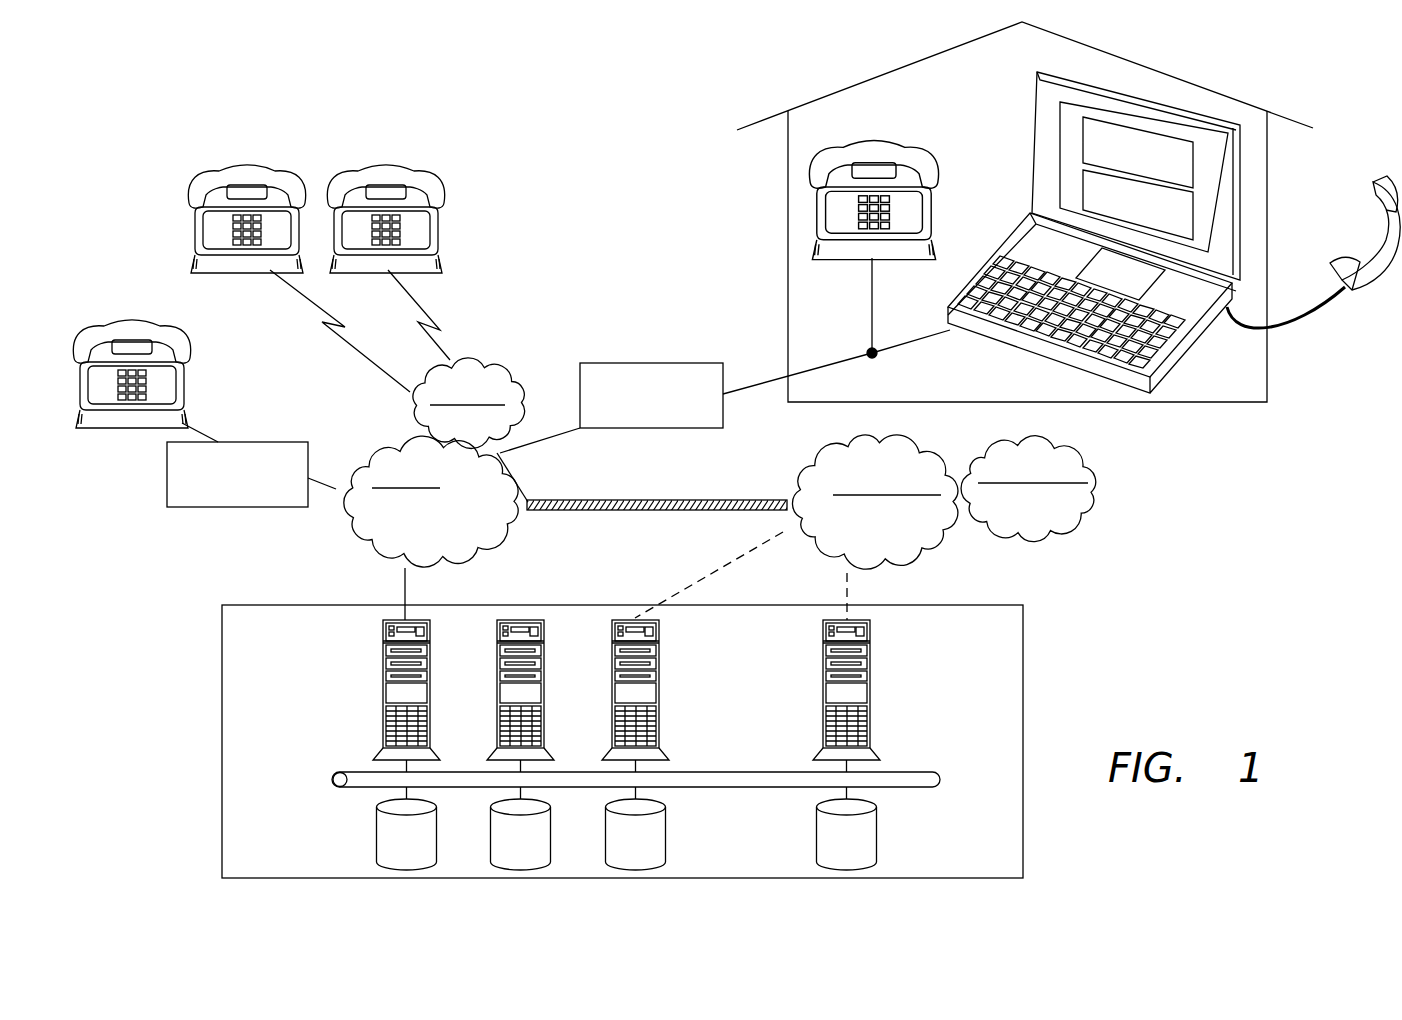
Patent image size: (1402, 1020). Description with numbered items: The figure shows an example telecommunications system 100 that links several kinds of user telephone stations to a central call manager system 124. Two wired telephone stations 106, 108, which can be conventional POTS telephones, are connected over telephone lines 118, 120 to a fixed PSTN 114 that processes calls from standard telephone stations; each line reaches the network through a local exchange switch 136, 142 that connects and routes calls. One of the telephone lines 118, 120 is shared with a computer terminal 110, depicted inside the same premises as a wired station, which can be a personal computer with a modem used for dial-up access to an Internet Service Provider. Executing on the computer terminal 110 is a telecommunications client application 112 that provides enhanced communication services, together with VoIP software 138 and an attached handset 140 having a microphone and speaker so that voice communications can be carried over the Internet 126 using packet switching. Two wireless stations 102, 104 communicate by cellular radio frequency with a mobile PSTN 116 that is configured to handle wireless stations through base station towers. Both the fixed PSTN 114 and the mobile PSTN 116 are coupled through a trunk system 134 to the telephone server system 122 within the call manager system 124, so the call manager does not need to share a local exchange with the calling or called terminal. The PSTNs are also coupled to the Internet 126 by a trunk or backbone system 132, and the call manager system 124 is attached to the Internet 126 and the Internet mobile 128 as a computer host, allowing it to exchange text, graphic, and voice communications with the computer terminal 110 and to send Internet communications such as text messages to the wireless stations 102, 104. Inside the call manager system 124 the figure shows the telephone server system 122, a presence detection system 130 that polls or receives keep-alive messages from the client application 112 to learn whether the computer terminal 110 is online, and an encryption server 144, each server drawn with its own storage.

The telecommunications system 100 is at (363, 80).
The wireless station 102 is at (250, 156).
The wireless station 104 is at (385, 157).
The wired telephone station 106 is at (155, 313).
The wired telephone station 108 is at (877, 132).
The computer terminal 110 is at (1028, 95).
The telecommunications client application 112 is at (1092, 125).
The fixed PSTN 114 is at (380, 437).
The mobile PSTN 116 is at (482, 358).
The telephone line 118 is at (190, 441).
The telephone line 120 is at (832, 365).
The telephone server system 122 is at (383, 645).
The call manager system 124 is at (1022, 648).
The Internet 126 is at (922, 543).
The Internet mobile 128 is at (1038, 543).
The presence detection system 130 is at (870, 638).
The trunk system 132 is at (627, 498).
The trunk system 134 is at (405, 583).
The local exchange switch 136 is at (672, 363).
The VoIP software 138 is at (1153, 202).
The handset 140 is at (1383, 178).
The local exchange switch 142 is at (207, 507).
The encryption server 144 is at (659, 638).